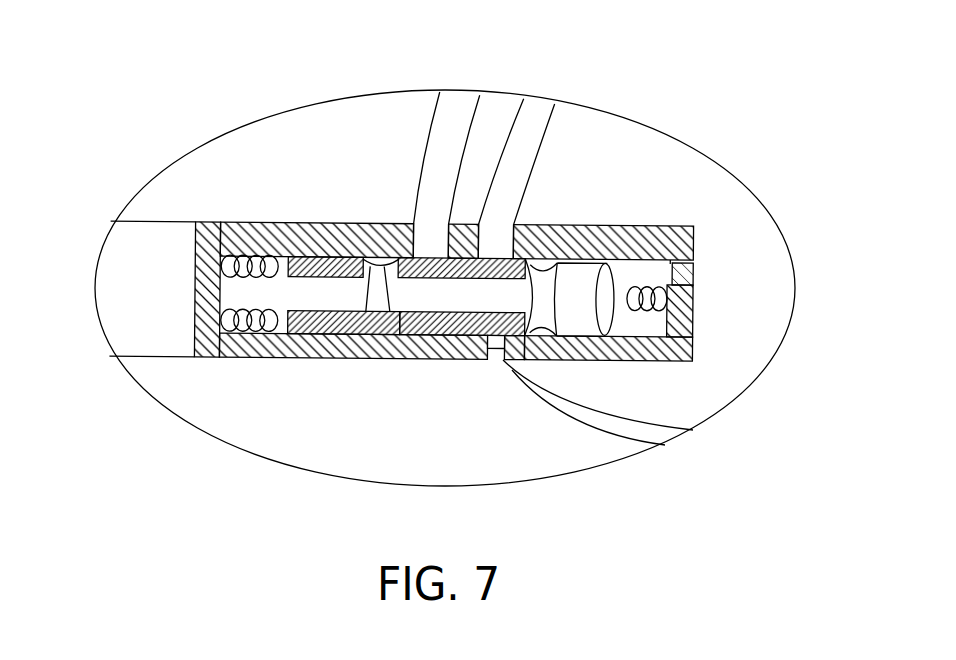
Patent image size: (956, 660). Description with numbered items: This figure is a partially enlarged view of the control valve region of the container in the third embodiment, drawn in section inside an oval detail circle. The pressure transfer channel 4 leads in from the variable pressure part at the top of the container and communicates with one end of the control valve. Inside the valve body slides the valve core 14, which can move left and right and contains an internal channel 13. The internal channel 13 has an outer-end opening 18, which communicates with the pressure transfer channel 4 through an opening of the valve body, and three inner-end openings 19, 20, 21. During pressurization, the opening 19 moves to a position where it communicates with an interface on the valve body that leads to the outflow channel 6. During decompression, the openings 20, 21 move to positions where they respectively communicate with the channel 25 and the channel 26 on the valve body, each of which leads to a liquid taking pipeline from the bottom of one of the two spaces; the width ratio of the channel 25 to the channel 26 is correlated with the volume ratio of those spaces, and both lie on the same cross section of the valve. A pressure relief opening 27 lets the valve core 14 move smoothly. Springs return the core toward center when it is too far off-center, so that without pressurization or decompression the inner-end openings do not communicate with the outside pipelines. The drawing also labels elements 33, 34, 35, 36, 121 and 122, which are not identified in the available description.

The pressure transfer channel 4 is at (416, 288).
The outflow channel 6 is at (483, 134).
The internal channel 13 is at (401, 226).
The valve core 14 is at (571, 160).
The opening 18 is at (344, 362).
The opening 19 is at (458, 381).
The opening 20 is at (370, 349).
The opening 21 is at (493, 335).
The channel 25 is at (625, 252).
The channel 26 is at (499, 220).
The opening 27 is at (358, 215).
The housing lower wall 33 is at (608, 370).
The port 34 is at (524, 397).
The channel 35 is at (620, 428).
The seat 36 is at (761, 222).
The spring 121 is at (269, 283).
The return spring 122 is at (738, 356).